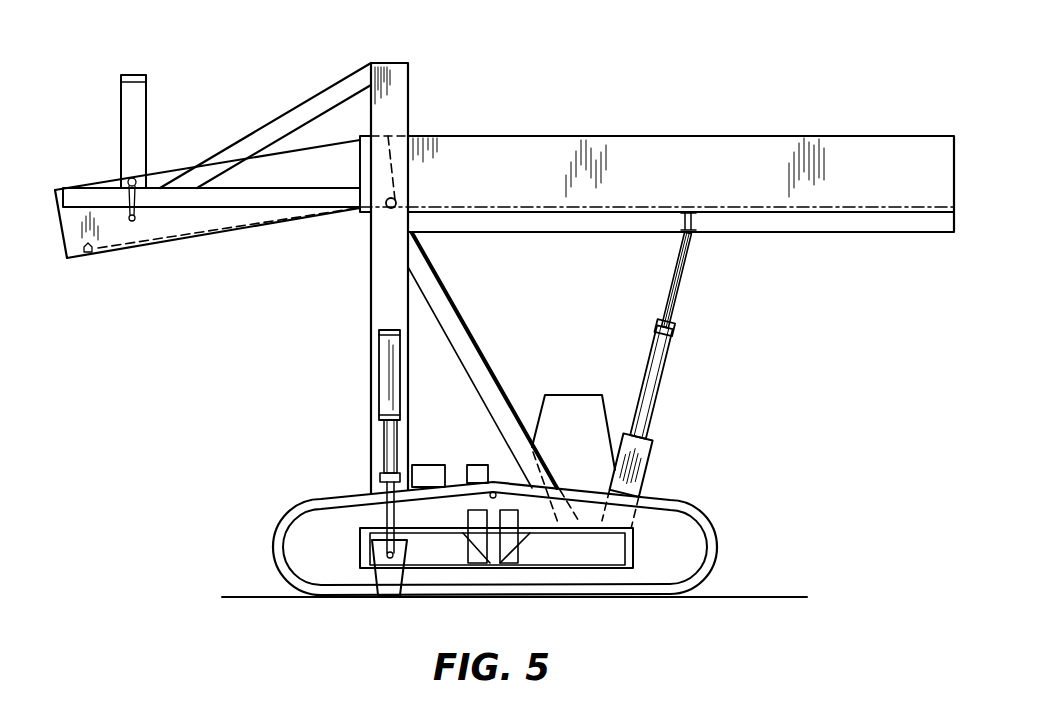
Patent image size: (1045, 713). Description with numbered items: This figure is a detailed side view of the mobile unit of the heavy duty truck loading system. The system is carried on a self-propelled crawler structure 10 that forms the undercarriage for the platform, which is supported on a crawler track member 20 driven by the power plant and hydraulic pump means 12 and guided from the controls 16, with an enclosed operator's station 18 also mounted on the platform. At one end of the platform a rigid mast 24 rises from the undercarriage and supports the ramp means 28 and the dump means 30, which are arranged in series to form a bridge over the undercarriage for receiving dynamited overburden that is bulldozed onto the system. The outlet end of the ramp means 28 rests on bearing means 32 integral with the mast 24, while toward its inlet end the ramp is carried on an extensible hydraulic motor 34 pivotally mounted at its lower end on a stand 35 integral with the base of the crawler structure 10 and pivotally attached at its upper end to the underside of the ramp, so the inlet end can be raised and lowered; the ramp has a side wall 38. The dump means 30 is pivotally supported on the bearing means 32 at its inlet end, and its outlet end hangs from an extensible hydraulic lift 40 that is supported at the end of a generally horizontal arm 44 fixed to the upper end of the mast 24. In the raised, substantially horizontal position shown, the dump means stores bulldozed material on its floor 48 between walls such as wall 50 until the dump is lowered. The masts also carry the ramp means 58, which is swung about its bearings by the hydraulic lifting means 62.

The crawler structure 10 is at (728, 513).
The power plant and hydraulic pump means 12 is at (427, 470).
The controls 16 is at (475, 472).
The enclosed operator's station 18 is at (570, 405).
The crawler track member 20 is at (287, 510).
The mast 24 is at (388, 73).
The ramp means 28 is at (815, 136).
The dump means 30 is at (175, 167).
The bearing means 32 is at (397, 202).
The extensible hydraulic motor 34 is at (653, 388).
The stand 35 is at (638, 465).
The side wall 38 is at (907, 158).
The extensible hydraulic lift 40 is at (132, 83).
The arm 44 is at (263, 202).
The floor 48 is at (88, 257).
The wall 50 is at (115, 237).
The ramp means 58 is at (387, 598).
The hydraulic lifting means 62 is at (385, 385).